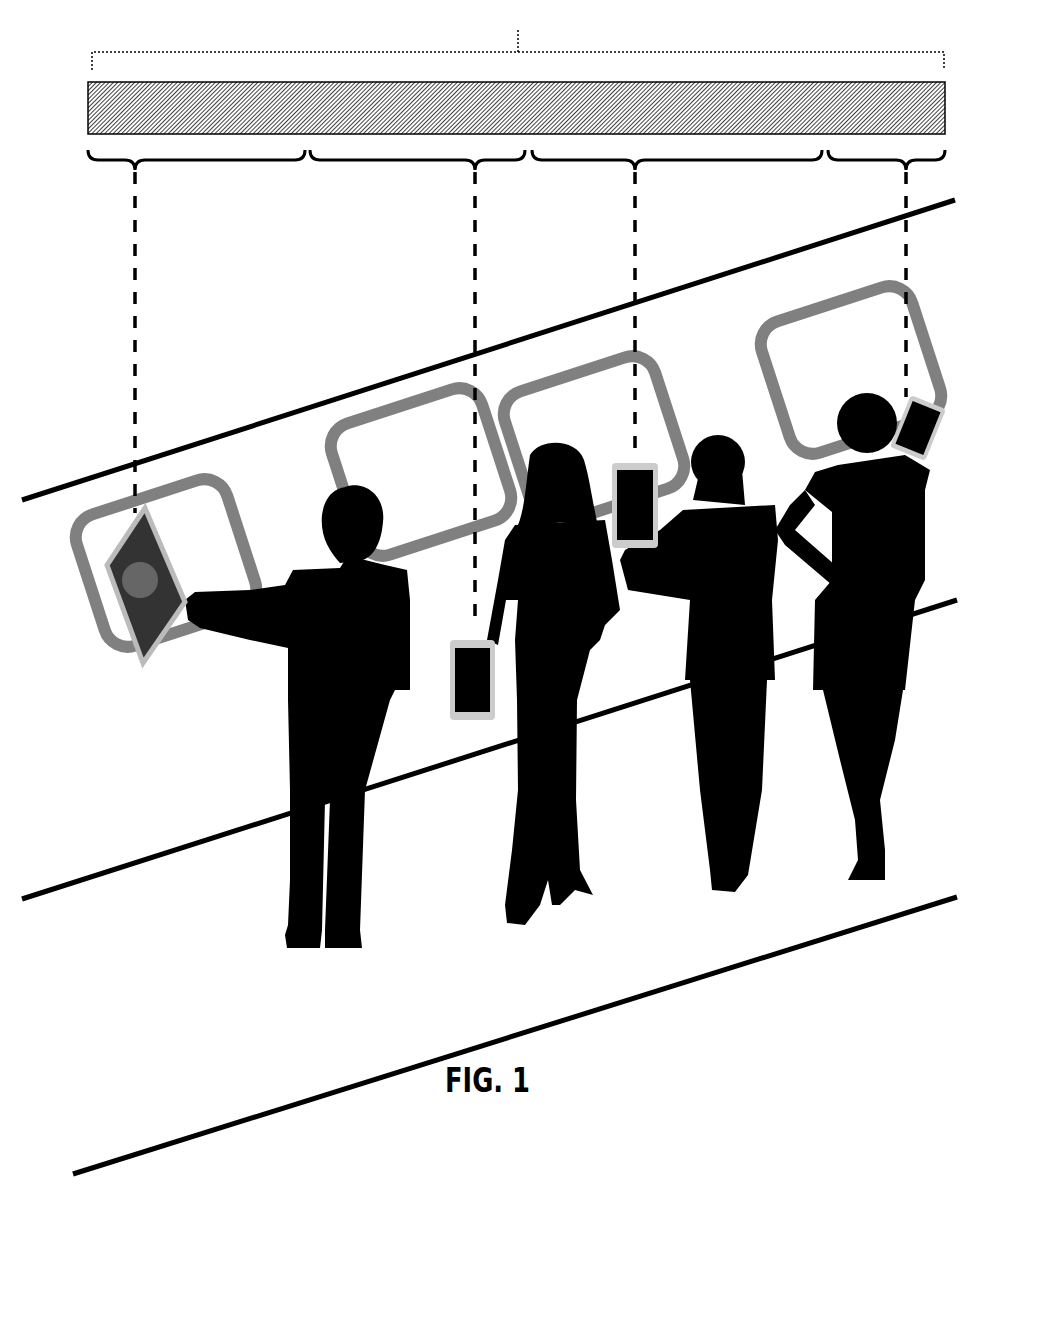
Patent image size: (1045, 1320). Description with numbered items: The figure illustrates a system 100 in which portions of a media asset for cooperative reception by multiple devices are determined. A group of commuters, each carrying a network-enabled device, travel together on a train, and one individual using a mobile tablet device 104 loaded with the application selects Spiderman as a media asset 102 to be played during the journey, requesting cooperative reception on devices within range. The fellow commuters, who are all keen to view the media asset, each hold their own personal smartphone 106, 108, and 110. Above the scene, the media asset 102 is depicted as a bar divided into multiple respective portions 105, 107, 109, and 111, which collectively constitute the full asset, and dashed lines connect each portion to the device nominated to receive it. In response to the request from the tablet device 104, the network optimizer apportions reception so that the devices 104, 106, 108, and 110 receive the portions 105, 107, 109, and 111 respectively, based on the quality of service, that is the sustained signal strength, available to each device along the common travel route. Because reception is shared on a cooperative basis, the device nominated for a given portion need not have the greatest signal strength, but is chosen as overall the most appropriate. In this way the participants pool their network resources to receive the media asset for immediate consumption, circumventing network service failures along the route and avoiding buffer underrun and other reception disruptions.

The environment 100 is at (80, 47).
The media asset 102 is at (612, 21).
The mobile tablet device 104 is at (165, 692).
The portion of the media asset 105 is at (190, 199).
The smartphone 106 is at (490, 745).
The portion of the media asset 107 is at (463, 199).
The smartphone 108 is at (682, 458).
The portion of the media asset 109 is at (682, 199).
The smartphone 110 is at (953, 395).
The portion of the media asset 111 is at (893, 196).